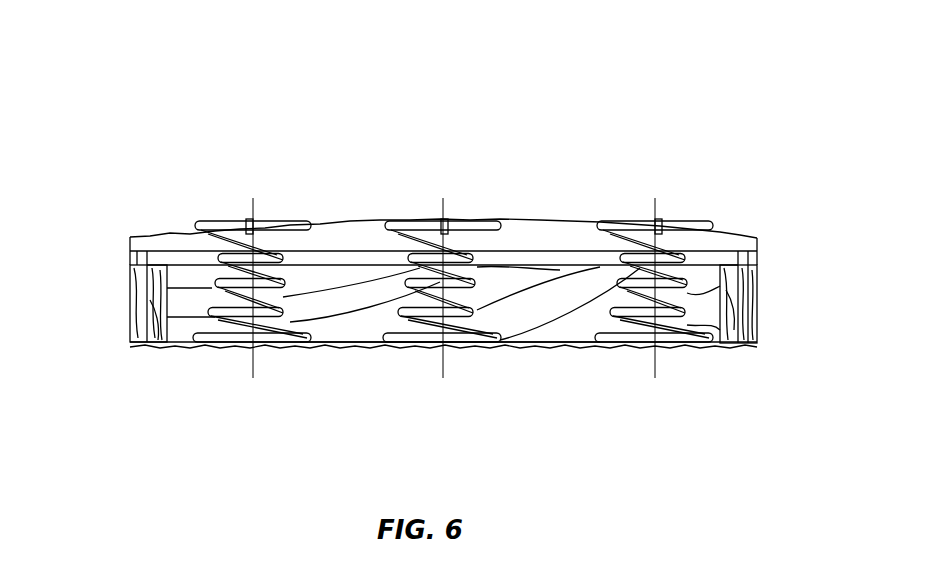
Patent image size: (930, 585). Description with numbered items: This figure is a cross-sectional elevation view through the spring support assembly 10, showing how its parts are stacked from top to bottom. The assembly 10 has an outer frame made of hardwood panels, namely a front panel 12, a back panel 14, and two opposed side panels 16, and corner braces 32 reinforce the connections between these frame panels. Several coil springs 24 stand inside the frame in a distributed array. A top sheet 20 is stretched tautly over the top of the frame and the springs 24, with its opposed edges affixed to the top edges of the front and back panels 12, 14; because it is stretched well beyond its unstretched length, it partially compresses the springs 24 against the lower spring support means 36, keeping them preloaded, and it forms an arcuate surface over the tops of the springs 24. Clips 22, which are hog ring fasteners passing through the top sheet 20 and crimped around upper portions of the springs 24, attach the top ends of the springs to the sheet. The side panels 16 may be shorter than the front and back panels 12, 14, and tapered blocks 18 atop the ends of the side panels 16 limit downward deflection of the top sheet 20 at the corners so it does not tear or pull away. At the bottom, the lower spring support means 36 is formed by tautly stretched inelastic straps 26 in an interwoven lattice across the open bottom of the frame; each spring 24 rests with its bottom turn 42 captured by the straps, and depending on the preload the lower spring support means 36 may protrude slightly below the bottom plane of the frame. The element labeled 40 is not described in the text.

The assembly 10 is at (218, 135).
The front panel 12 is at (752, 290).
The back panel 14 is at (128, 270).
The side panels 16 is at (365, 330).
The tapered blocks 18 is at (130, 247).
The top sheet 20 is at (540, 218).
The clips 22 is at (247, 223).
The coil springs 24 is at (283, 308).
The inelastic straps 26 is at (552, 348).
The corner braces 32 is at (135, 332).
The lower spring support means 36 is at (472, 370).
The upper spring end 40 is at (278, 223).
The bottom turn 42 is at (205, 345).